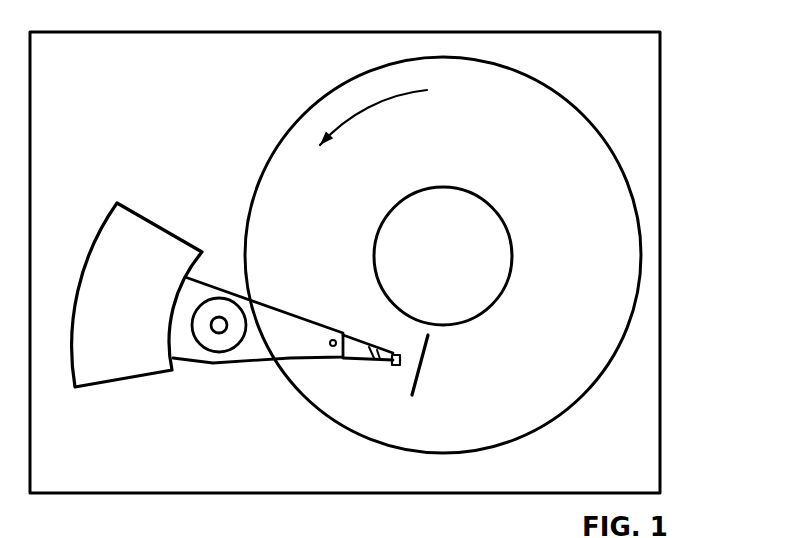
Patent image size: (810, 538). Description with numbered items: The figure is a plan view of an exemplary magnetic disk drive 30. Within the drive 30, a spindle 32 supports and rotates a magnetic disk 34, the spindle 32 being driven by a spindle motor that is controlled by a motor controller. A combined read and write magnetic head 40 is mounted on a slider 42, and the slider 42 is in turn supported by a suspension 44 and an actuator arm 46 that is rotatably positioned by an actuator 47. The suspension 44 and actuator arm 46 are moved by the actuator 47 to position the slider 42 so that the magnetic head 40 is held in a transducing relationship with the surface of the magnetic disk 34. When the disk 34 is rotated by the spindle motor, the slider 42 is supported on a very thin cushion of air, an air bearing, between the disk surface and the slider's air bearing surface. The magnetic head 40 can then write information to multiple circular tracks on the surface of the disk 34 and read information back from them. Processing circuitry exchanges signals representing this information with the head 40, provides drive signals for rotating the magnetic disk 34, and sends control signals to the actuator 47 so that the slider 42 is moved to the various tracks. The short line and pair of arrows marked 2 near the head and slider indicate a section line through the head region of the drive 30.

The magnetic disk drive 30 is at (680, 34).
The spindle 32 is at (475, 190).
The magnetic disk 34 is at (570, 256).
The magnetic head 40 is at (397, 365).
The slider 42 is at (397, 353).
The suspension 44 is at (353, 362).
The actuator arm 46 is at (267, 298).
The actuator 47 is at (157, 223).
The section line 2- 2 is at (434, 345).